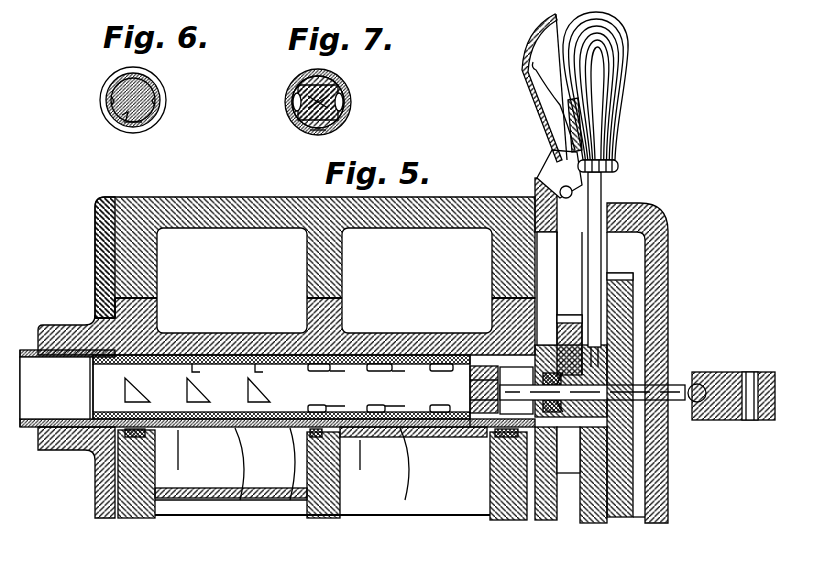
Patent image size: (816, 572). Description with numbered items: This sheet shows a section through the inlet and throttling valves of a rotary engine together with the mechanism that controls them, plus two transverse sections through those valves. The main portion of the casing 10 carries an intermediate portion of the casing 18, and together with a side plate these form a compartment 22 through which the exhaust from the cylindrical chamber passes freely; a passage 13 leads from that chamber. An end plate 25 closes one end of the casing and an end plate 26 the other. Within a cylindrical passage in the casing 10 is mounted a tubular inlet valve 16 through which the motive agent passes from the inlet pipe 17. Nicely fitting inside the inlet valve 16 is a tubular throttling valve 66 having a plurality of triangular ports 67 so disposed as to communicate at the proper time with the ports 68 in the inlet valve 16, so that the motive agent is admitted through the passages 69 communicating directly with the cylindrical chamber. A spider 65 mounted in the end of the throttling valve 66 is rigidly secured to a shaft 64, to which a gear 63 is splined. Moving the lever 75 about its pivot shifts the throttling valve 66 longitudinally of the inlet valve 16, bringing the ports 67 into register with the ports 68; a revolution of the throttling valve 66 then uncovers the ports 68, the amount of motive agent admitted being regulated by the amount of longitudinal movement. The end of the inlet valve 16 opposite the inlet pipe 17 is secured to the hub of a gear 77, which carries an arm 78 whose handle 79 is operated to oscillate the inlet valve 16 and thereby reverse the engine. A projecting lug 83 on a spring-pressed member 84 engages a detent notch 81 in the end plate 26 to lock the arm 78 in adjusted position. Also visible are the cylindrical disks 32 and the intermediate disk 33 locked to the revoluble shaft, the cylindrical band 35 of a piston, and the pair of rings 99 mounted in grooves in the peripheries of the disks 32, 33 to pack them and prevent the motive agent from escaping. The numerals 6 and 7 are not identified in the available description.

In FIG. 5, the pawl 6 is at (188, 378).
In FIG. 5, the collar 7 is at (476, 333).
In FIG. 5, the casing 10 is at (295, 350).
In FIG. 5, the passage 13 is at (90, 400).
In FIG. 6, the tubular inlet valve 16 is at (166, 88).
In FIG. 7, the tubular inlet valve 16 is at (352, 108).
In FIG. 5, the tubular inlet valve 16 is at (355, 360).
In FIG. 5, the inlet pipe 17 is at (30, 350).
In FIG. 5, the intermediate portion of the casing 18 is at (210, 200).
In FIG. 5, the compartment 22 is at (324, 280).
In FIG. 5, the end plate 25 is at (95, 245).
In FIG. 5, the end plate 26 is at (650, 240).
In FIG. 5, the cylindrical disks 32 is at (135, 520).
In FIG. 5, the intermediate disk 33 is at (320, 520).
In FIG. 5, the cylindrical band 35 is at (212, 500).
In FIG. 5, the gear 63 is at (632, 472).
In FIG. 7, the shaft 64 is at (337, 128).
In FIG. 5, the shaft 64 is at (690, 384).
In FIG. 7, the spider 65 is at (345, 92).
In FIG. 5, the spider 65 is at (472, 366).
In FIG. 6, the tubular throttling valve 66 is at (121, 118).
In FIG. 7, the tubular throttling valve 66 is at (293, 98).
In FIG. 5, the tubular throttling valve 66 is at (413, 364).
In FIG. 6, the triangular ports 67 is at (104, 98).
In FIG. 5, the triangular ports 67 is at (208, 376).
In FIG. 6, the ports 68 is at (132, 132).
In FIG. 7, the ports 68 is at (318, 133).
In FIG. 5, the ports 68 is at (240, 500).
In FIG. 5, the passages 69 is at (178, 430).
In FIG. 5, the lever 75 is at (775, 395).
In FIG. 5, the gear 77 is at (570, 330).
In FIG. 5, the arm 78 is at (600, 193).
In FIG. 5, the handle 79 is at (616, 78).
In FIG. 5, the detent notch 81 is at (540, 175).
In FIG. 5, the projecting lug 83 is at (548, 165).
In FIG. 5, the spring-pressed member 84 is at (522, 68).
In FIG. 5, the rings 99 is at (95, 475).